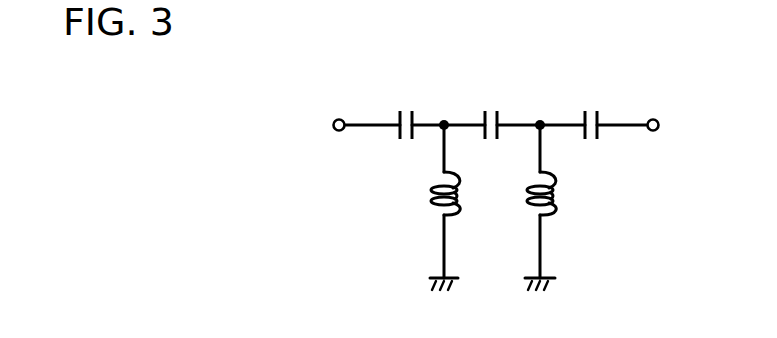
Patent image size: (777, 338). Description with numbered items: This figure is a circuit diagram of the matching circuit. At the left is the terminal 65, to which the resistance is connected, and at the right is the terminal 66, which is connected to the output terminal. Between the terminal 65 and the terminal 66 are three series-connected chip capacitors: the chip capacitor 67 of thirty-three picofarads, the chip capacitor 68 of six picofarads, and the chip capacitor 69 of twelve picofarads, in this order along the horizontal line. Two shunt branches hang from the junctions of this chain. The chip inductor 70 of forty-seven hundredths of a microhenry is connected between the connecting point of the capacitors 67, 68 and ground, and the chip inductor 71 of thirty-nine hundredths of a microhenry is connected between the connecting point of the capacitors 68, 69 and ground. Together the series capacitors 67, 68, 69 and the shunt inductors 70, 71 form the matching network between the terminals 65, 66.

The terminal 65 is at (337, 117).
The terminal 66 is at (659, 118).
The chip capacitor 67 is at (403, 105).
The chip capacitor 68 is at (494, 105).
The chip capacitor 69 is at (593, 105).
The chip inductor 70 is at (428, 203).
The chip inductor 71 is at (561, 200).